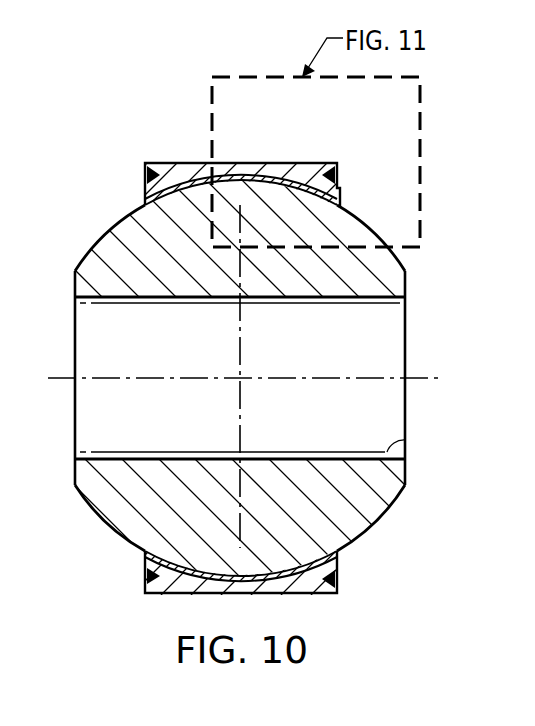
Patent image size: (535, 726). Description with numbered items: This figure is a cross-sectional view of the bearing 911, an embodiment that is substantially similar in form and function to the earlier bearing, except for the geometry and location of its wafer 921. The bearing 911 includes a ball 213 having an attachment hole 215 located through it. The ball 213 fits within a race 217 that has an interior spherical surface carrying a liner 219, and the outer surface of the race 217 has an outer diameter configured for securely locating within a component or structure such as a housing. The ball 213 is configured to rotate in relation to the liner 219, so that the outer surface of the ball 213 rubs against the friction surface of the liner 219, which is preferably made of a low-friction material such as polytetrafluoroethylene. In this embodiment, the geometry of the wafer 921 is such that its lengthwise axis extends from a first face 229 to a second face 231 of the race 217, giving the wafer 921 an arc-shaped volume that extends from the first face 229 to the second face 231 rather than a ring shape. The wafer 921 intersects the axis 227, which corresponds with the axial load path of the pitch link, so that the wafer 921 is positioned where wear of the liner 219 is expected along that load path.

The bearing 911 is at (97, 70).
The ball 213 is at (378, 520).
The attachment hole 215 is at (408, 445).
The race 217 is at (168, 594).
The liner 219 is at (145, 553).
The axis 227 is at (241, 407).
The first face 229 is at (145, 165).
The second face 231 is at (337, 164).
The wafer 921 is at (297, 197).